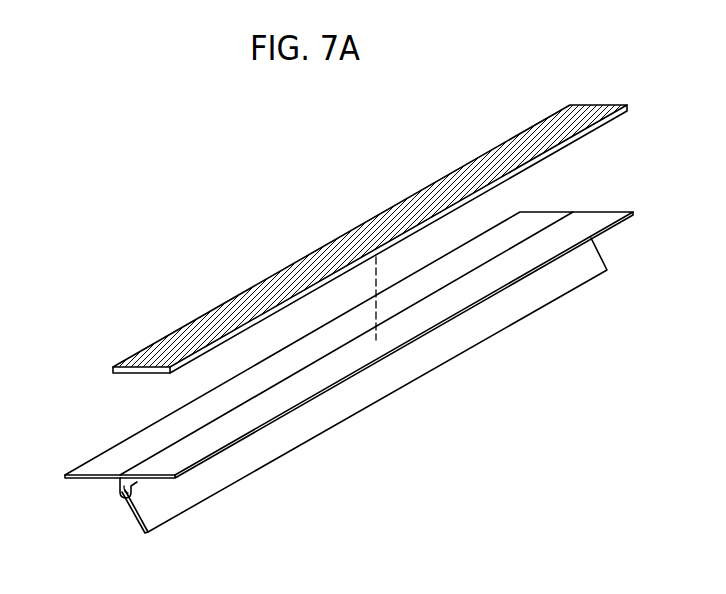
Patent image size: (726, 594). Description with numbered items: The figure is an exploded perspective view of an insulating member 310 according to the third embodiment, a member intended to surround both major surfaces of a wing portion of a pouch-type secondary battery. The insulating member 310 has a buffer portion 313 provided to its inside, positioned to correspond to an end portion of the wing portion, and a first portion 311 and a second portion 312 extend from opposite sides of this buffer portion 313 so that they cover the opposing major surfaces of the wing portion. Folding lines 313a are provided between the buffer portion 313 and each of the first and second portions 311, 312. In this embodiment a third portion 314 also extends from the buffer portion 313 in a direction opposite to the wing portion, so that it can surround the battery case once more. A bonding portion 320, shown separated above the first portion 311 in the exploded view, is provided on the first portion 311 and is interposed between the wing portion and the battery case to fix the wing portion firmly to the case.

The insulating member 310 is at (319, 388).
The first portion 311 is at (158, 467).
The second portion 312 is at (178, 508).
The buffer portion 313 is at (115, 483).
The folding lines 313a is at (120, 497).
The third portion 314 is at (93, 463).
The bonding portion 320 is at (327, 246).